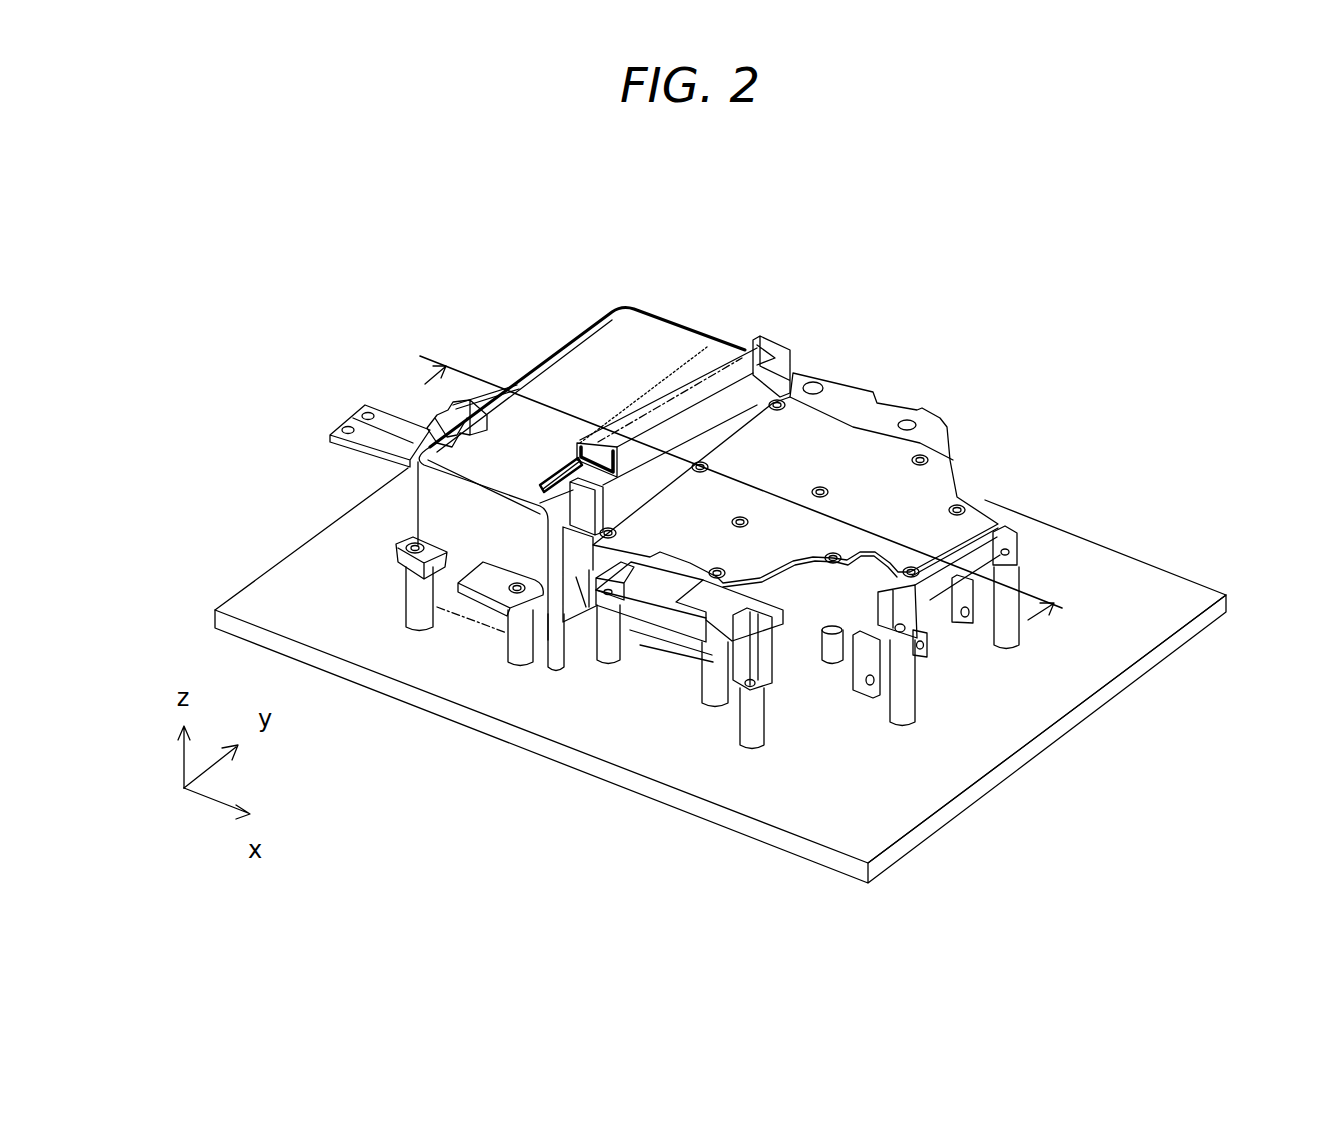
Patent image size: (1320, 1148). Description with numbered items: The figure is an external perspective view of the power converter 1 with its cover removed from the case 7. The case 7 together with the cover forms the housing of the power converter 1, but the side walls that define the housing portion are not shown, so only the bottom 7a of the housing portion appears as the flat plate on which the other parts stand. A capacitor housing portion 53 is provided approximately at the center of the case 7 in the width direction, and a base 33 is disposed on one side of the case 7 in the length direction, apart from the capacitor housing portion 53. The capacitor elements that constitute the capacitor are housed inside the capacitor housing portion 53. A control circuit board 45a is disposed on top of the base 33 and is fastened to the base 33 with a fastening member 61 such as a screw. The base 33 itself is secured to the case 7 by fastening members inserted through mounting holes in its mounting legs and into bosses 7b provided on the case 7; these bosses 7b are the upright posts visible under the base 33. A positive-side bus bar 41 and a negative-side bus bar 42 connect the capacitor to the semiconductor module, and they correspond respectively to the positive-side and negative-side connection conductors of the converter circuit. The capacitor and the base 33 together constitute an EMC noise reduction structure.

The power converter 1 is at (625, 192).
The case 7 is at (720, 704).
The bottom 7a is at (618, 774).
The boss 7b is at (553, 644).
The base 33 is at (1003, 543).
The positive-side bus bar 41 is at (706, 358).
The negative-side bus bar 42 is at (565, 458).
The control circuit board 45a is at (850, 447).
The capacitor housing portion 53 is at (466, 533).
The fastening member 61 is at (814, 380).